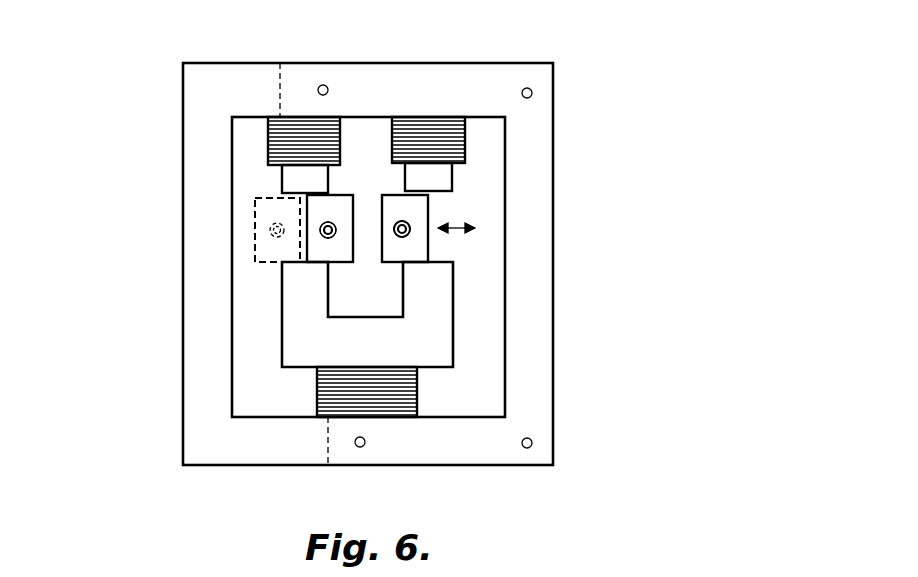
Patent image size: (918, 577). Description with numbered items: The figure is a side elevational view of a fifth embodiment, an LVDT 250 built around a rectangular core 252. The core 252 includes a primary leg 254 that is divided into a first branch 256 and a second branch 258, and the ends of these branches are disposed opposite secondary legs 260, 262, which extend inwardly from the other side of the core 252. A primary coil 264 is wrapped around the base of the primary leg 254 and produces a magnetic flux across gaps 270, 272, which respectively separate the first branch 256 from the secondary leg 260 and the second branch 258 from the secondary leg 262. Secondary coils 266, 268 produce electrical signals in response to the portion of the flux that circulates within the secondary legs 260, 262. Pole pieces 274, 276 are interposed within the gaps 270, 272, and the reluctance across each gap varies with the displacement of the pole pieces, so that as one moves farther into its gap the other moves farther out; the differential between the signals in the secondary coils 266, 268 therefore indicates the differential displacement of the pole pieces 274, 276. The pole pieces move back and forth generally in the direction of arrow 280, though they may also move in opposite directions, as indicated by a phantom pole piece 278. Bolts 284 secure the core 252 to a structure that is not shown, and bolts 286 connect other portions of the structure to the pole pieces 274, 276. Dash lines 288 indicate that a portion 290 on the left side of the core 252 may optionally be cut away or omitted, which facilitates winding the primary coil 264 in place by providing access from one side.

The LVDT 250 is at (163, 350).
The core 252 is at (555, 380).
The primary leg 254 is at (298, 372).
The first branch 256 is at (282, 282).
The second branch 258 is at (445, 330).
The secondary leg 260 is at (288, 178).
The secondary leg 262 is at (453, 178).
The primary coil 264 is at (407, 400).
The secondary coil 266 is at (280, 135).
The secondary coil 268 is at (455, 147).
The gap 270 is at (290, 262).
The gap 272 is at (442, 260).
The pole piece 274 is at (337, 203).
The pole piece 276 is at (428, 207).
The phantom pole piece 278 is at (255, 213).
The arrow 280 is at (460, 230).
The bolts 284 is at (328, 88).
The bolts 286 is at (333, 237).
The dash lines 288 is at (283, 85).
The portion 290 is at (183, 403).